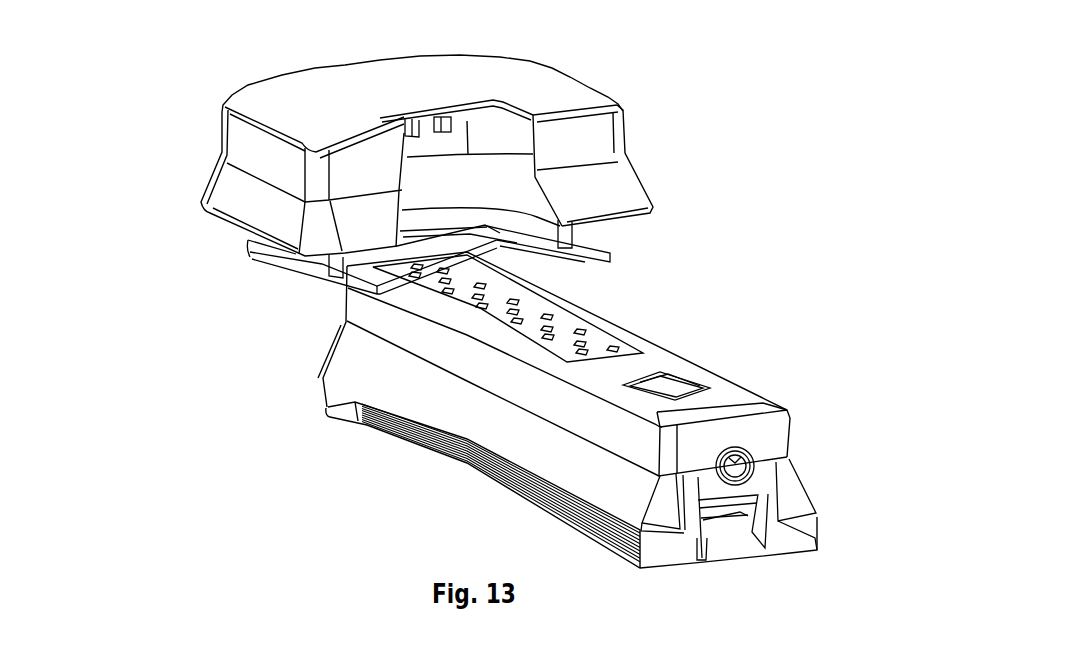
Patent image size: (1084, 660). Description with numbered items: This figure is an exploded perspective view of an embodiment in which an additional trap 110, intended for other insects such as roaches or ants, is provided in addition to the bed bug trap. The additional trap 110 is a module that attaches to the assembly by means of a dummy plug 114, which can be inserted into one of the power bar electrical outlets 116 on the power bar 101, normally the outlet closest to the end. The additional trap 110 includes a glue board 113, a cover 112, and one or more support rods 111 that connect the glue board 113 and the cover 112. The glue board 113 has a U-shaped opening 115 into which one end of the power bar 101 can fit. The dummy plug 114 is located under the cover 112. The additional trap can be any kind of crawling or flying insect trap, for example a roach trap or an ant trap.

The power bar 101 is at (683, 360).
The additional trap 110 is at (317, 107).
The support rods 111 is at (577, 238).
The cover 112 is at (537, 83).
The glue board 113 is at (587, 250).
The dummy plug 114 is at (408, 116).
The U-shaped opening 115 is at (513, 242).
The power bar electrical outlets 116 is at (405, 268).